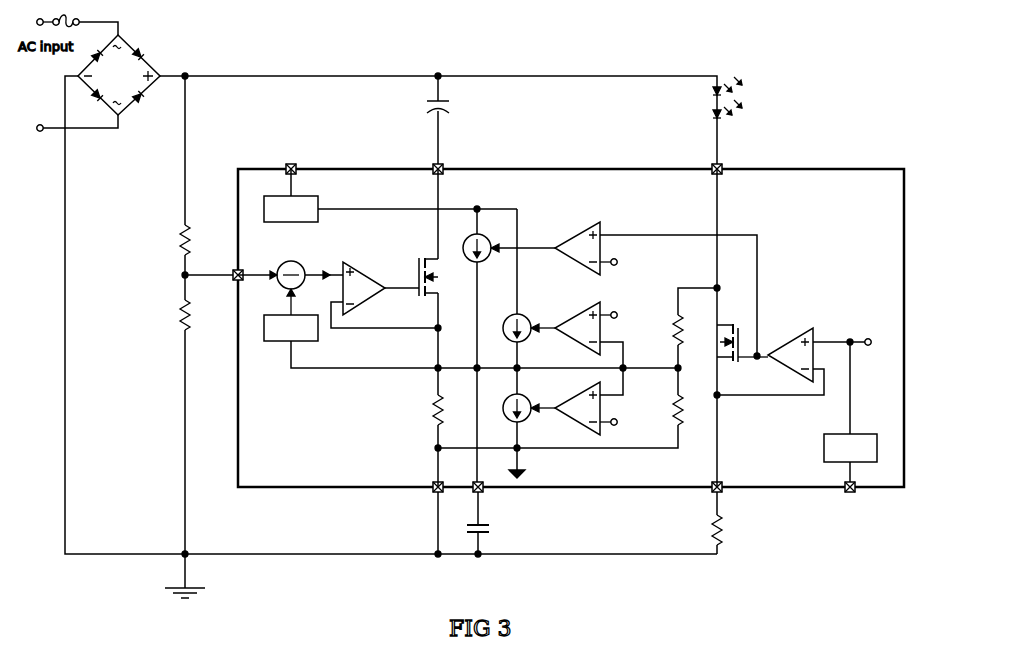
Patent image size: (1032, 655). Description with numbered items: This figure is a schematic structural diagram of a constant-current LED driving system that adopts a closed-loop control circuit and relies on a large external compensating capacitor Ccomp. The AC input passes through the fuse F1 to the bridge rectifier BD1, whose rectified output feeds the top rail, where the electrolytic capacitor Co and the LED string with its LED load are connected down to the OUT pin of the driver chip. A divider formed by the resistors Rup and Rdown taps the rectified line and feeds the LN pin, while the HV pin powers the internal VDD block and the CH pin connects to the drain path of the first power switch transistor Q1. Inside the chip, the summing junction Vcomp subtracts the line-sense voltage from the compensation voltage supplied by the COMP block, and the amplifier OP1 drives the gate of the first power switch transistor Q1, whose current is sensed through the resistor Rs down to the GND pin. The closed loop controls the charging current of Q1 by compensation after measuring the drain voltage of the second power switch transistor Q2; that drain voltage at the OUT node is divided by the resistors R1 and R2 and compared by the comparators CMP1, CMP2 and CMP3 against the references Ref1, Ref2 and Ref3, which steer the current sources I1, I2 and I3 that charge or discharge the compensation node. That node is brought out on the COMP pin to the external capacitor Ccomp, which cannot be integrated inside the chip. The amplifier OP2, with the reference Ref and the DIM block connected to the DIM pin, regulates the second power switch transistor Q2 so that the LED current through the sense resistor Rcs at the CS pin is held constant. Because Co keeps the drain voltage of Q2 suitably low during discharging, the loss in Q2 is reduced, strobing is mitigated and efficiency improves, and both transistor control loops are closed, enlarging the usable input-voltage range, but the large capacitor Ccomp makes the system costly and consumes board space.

The fuse F1 is at (61, 14).
The bridge rectifier BD1 is at (119, 75).
The upper divider resistor Rup is at (168, 240).
The lower divider resistor Rdown is at (158, 315).
The electrolytic capacitor Co is at (451, 105).
The LED load LED is at (708, 97).
The high voltage pin HV is at (276, 162).
The channel pin CH is at (425, 162).
The output pin OUT is at (700, 162).
The line sense pin LN is at (229, 284).
The ground pin GND is at (419, 496).
The current sense pin CS is at (729, 496).
The supply regulator block VDD is at (291, 209).
The summing junction Vcomp-VLN Vcomp is at (290, 281).
The first operational amplifier OP1 is at (364, 288).
The first power switch transistor Q1 is at (411, 265).
The compensation block and pin COMP is at (395, 413).
The first current source I1 is at (509, 244).
The second current source I2 is at (529, 324).
The third current source I3 is at (529, 404).
The first comparator CMP1 is at (577, 248).
The second comparator CMP2 is at (577, 328).
The third comparator CMP3 is at (577, 408).
The first reference voltage Ref1 is at (627, 262).
The second reference voltage Ref2 is at (627, 315).
The third reference voltage Ref3 is at (627, 422).
The sense resistor Rs is at (427, 410).
The first divider resistor R1 is at (689, 330).
The second divider resistor R2 is at (689, 410).
The second power switch transistor Q2 is at (742, 334).
The second operational amplifier OP2 is at (790, 355).
The reference voltage Ref is at (866, 333).
The dimming block and pin DIM is at (855, 472).
The large external compensating capacitor Ccomp is at (504, 536).
The current sense resistor Rcs is at (731, 530).